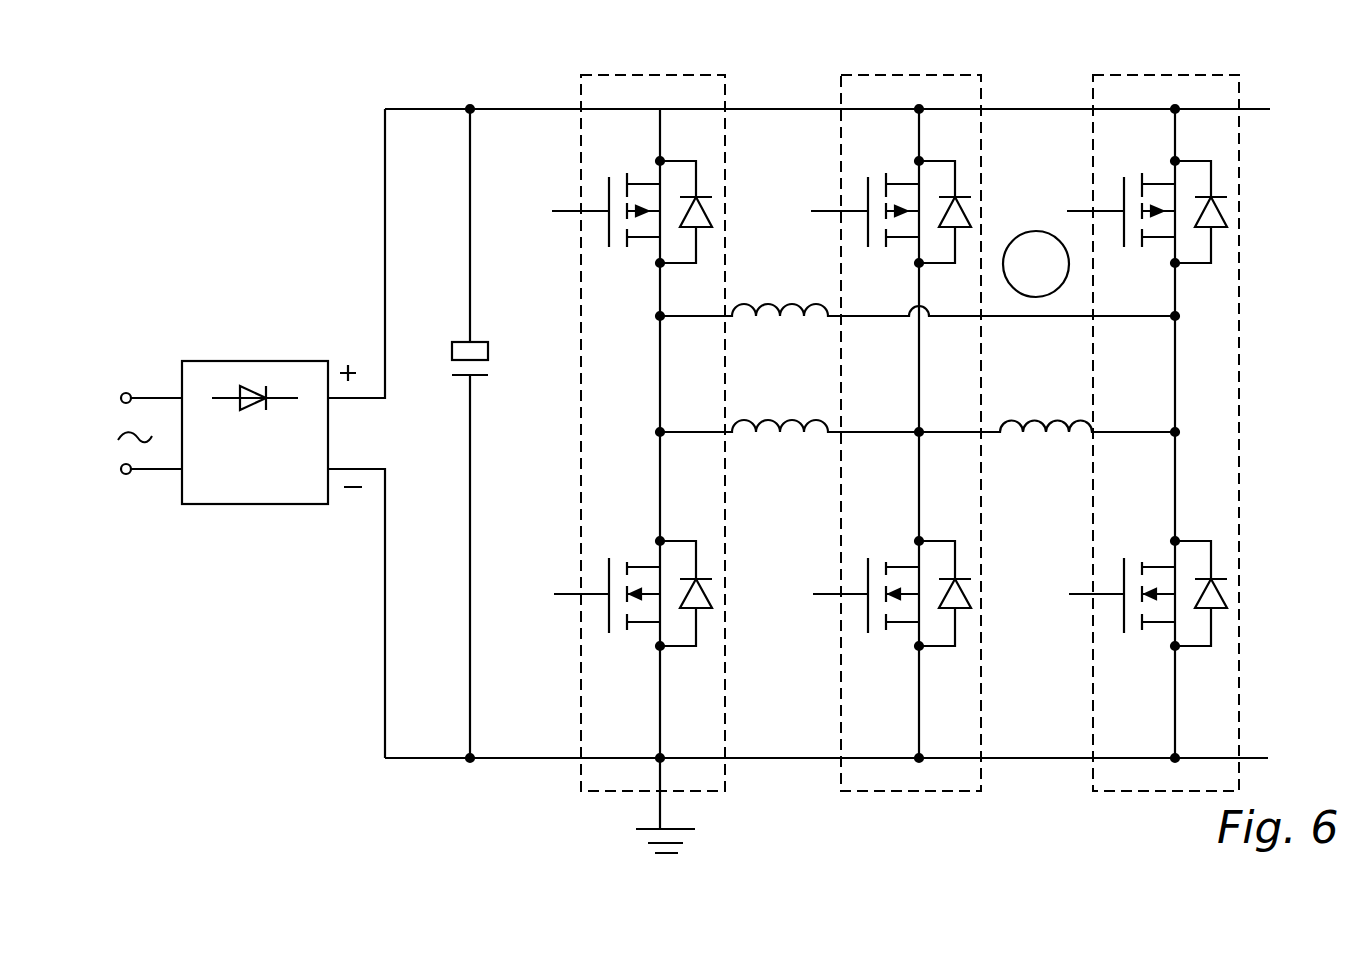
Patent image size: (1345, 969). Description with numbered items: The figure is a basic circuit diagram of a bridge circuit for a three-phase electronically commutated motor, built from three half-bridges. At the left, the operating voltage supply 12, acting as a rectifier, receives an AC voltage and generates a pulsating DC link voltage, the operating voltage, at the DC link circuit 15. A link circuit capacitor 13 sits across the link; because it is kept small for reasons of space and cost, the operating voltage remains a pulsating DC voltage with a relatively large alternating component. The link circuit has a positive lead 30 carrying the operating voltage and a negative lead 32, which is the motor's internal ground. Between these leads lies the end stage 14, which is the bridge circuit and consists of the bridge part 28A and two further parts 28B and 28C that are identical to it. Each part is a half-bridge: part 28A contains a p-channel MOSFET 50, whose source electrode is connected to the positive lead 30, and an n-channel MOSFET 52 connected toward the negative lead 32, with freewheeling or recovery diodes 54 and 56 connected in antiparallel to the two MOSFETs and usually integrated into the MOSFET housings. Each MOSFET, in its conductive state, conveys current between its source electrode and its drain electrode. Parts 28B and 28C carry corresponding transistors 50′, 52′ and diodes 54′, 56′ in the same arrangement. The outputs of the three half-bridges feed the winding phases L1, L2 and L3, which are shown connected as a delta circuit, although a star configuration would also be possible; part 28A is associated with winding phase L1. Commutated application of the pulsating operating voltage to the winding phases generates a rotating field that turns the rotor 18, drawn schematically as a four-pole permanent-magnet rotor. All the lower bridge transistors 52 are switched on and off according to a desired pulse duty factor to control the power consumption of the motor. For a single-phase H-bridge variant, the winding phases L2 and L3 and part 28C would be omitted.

The operating voltage supply 12 is at (268, 480).
The link circuit capacitor 13 is at (488, 352).
The end stage 14 is at (640, 47).
The DC link circuit 15 is at (372, 398).
The rotor 18 is at (1028, 232).
The part of end stage 28A is at (717, 75).
The part of end stage 28B is at (946, 76).
The part of end stage 28C is at (1225, 76).
The positive lead 30 is at (547, 108).
The negative lead 32 is at (776, 757).
The p-channel MOSFET 50 is at (604, 186).
The n-channel MOSFET 52 is at (604, 555).
The freewheeling diode 54 is at (709, 215).
The freewheeling diode 56 is at (709, 596).
The upper MOSFET of second half-bridge 50′ is at (864, 186).
The lower MOSFET of second half-bridge 52′ is at (864, 555).
The upper freewheeling diode of second half-bridge 54′ is at (958, 222).
The lower freewheeling diode of second half-bridge 56′ is at (962, 594).
The winding phase L1 is at (762, 437).
The winding phase L2 is at (1015, 437).
The winding phase L3 is at (763, 312).